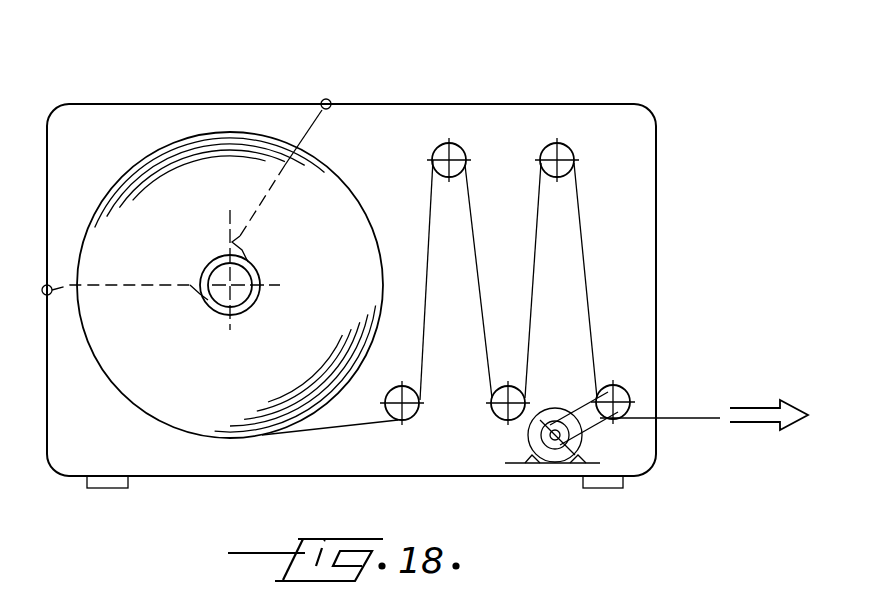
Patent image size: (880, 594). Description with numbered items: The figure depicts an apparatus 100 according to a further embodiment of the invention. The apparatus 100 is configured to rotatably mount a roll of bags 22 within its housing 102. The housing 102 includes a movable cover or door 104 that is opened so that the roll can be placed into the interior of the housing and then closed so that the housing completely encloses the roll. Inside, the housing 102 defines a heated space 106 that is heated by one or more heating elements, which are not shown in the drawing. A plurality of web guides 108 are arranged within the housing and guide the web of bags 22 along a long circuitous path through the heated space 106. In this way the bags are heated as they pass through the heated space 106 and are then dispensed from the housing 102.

The apparatus 100 is at (538, 58).
The housing 102 is at (363, 104).
The movable cover or door 104 is at (130, 104).
The heated space 106 is at (516, 150).
The web guides 108 is at (445, 155).
The roll of bags 22 is at (668, 416).